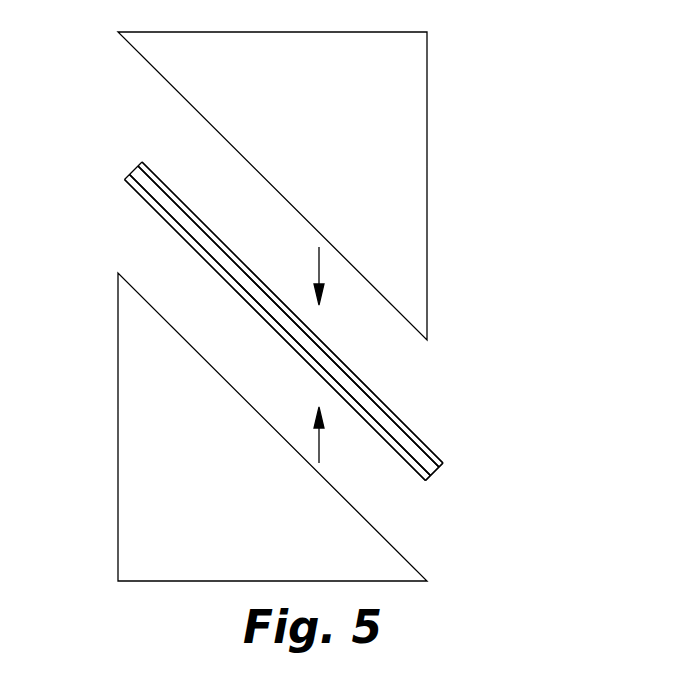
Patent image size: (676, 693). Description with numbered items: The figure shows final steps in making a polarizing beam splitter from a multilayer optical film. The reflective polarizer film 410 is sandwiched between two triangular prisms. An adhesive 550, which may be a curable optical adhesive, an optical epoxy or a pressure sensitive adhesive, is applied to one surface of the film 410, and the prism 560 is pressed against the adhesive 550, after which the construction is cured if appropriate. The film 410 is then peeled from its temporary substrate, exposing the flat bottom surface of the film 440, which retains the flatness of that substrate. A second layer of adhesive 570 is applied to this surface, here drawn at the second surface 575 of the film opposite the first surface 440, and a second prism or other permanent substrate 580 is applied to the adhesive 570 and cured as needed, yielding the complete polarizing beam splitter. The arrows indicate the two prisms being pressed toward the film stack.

The prism 560 is at (413, 75).
The second prism 580 is at (130, 434).
The second surface 575 is at (170, 215).
The adhesive 550 is at (430, 453).
The bottom surface of the film 440 is at (383, 412).
The film 410 is at (430, 470).
The second layer of adhesive 570 is at (417, 477).